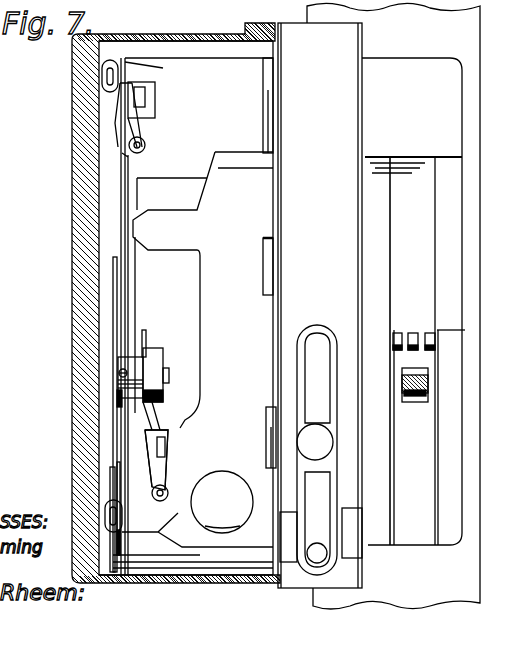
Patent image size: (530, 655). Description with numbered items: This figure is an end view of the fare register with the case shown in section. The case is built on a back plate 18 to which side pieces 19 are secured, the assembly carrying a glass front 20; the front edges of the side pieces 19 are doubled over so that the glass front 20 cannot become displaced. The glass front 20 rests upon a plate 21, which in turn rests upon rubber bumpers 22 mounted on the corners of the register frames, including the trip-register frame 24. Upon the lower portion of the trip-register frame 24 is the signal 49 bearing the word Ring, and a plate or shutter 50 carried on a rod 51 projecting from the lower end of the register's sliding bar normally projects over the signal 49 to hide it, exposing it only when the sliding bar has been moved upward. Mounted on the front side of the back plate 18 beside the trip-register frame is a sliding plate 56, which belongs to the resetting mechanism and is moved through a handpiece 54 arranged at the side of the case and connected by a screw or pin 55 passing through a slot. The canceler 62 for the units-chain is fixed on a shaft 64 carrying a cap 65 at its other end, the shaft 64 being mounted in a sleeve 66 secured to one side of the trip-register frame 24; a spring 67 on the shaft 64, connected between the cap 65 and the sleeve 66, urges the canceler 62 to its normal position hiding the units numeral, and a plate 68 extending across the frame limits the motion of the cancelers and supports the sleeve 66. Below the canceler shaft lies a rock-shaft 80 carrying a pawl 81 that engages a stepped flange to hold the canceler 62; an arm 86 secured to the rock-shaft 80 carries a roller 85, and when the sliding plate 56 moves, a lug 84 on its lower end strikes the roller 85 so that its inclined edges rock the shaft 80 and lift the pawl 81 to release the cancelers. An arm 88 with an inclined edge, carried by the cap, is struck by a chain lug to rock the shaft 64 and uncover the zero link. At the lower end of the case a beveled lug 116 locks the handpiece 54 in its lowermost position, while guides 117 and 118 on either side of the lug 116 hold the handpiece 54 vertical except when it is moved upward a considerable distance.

The back plate 18 is at (320, 305).
The side pieces 19 is at (184, 38).
The glass front 20 is at (76, 226).
The plate 21 is at (110, 175).
The rubber bumpers 22 is at (107, 60).
The trip-register frame 24 is at (156, 72).
The signal 49 is at (110, 462).
The plate or shutter 50 is at (112, 543).
The rod 51 is at (158, 562).
The handpiece 54 is at (314, 325).
The screw or pin 55 is at (315, 442).
The sliding plate 56 is at (186, 290).
The canceler 62 is at (113, 301).
The shaft 64 is at (170, 356).
The cap 65 is at (160, 393).
The sleeve 66 is at (134, 363).
The spring 67 is at (123, 375).
The plate 68 is at (117, 401).
The rock-shaft 80 is at (168, 448).
The pawl 81 is at (157, 411).
The lug 84 is at (170, 517).
The roller 85 is at (145, 145).
The arm 86 is at (143, 113).
The arm 88 is at (143, 330).
The lug 116 is at (317, 548).
The guide 117 is at (285, 532).
The guide 118 is at (354, 533).